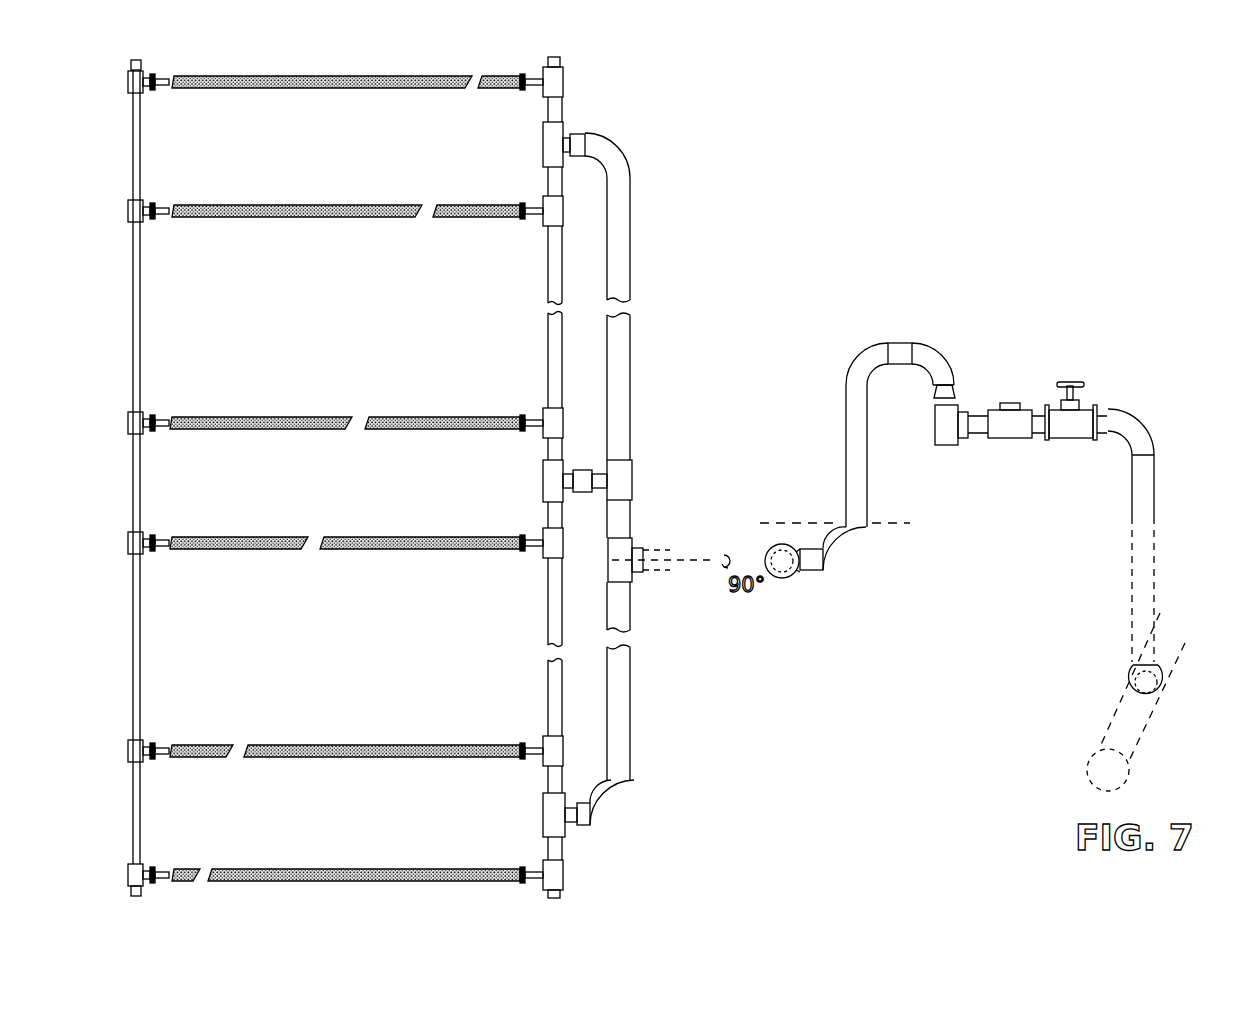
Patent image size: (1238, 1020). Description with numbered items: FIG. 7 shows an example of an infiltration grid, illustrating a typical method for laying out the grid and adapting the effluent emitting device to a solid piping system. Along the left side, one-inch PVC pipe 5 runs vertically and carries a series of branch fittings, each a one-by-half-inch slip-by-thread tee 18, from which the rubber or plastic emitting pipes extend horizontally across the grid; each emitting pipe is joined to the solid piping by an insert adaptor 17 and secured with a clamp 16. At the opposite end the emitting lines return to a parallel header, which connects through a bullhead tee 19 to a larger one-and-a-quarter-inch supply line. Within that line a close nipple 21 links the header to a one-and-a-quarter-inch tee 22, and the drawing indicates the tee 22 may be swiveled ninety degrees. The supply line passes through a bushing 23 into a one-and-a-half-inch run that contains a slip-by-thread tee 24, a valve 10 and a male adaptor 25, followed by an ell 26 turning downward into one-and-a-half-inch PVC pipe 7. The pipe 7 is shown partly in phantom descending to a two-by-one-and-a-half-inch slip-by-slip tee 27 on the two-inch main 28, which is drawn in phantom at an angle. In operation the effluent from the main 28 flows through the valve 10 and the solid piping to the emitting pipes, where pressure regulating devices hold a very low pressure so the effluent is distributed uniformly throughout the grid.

The 1-inch PVC pipe 5 is at (141, 268).
The 1.5-inch PVC pipe 7 is at (1148, 468).
The 1.5-inch valve 10 is at (1072, 410).
The clamp 16 is at (156, 94).
The insert adaptor 17 is at (150, 204).
The 1×0.5-inch SLxTH tee 18 is at (150, 414).
The 1.25×1-inch bullhead tee 19 is at (565, 134).
The 1.25-inch cl. nipple 21 is at (585, 478).
The 1.25-inch tee 22 is at (630, 478).
The 1.5×1.25-inch bushing 23 is at (935, 396).
The 1.5×0.5 SLxTH tee 24 is at (1020, 420).
The 1.5-inch male adaptor 25 is at (1098, 412).
The 1.5-inch ell 26 is at (1140, 425).
The 2×1.5 SLxSL tee 27 is at (1130, 672).
The 2-inch main 28 is at (1146, 737).